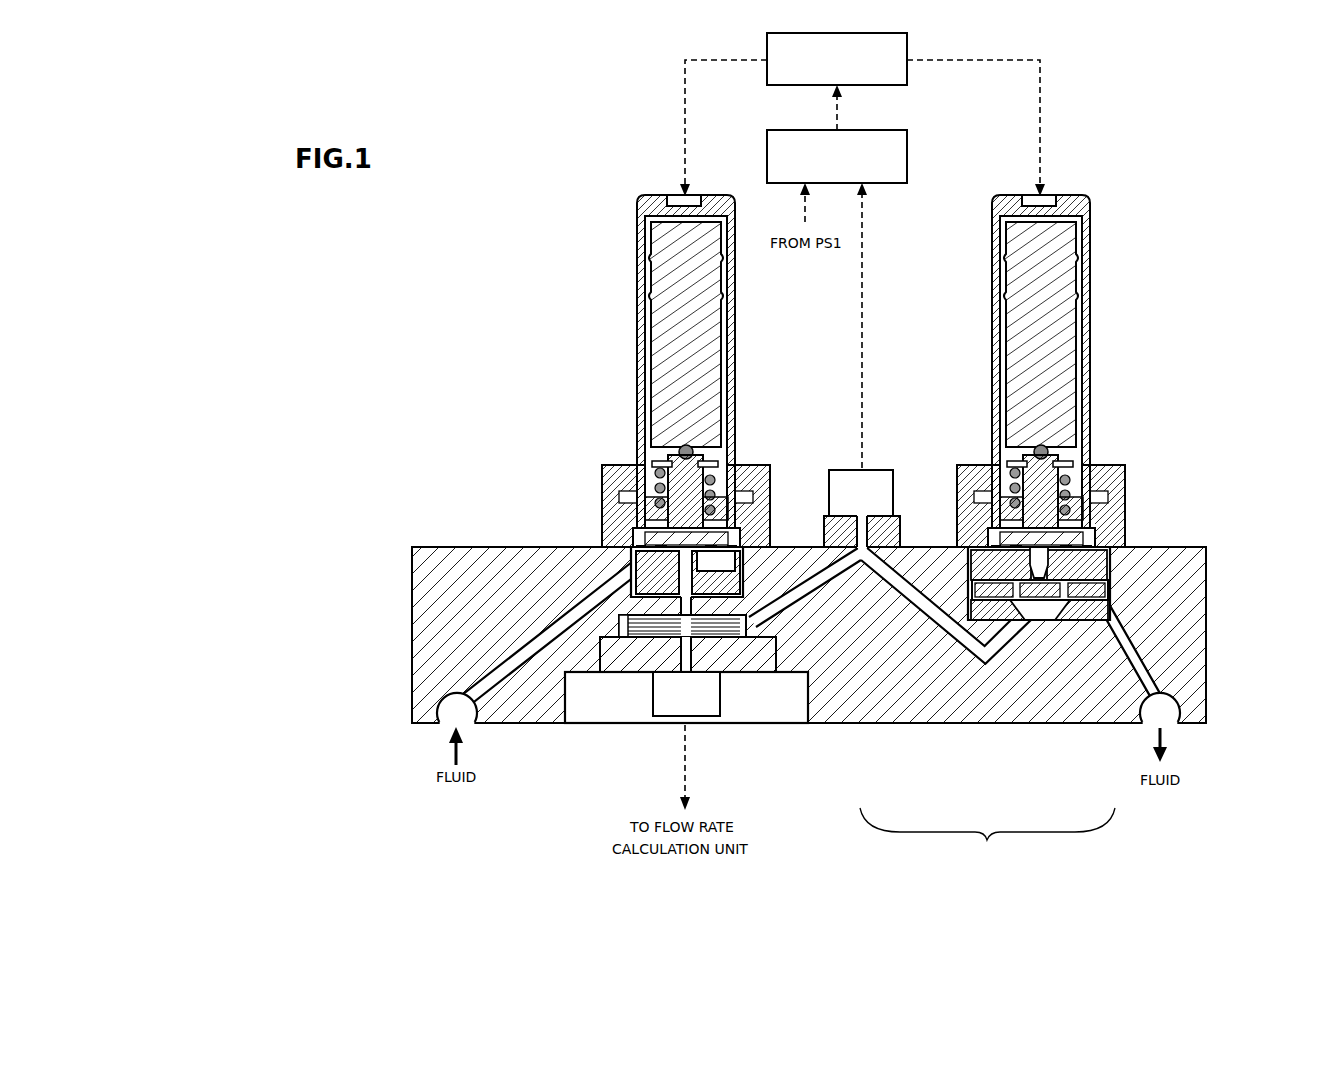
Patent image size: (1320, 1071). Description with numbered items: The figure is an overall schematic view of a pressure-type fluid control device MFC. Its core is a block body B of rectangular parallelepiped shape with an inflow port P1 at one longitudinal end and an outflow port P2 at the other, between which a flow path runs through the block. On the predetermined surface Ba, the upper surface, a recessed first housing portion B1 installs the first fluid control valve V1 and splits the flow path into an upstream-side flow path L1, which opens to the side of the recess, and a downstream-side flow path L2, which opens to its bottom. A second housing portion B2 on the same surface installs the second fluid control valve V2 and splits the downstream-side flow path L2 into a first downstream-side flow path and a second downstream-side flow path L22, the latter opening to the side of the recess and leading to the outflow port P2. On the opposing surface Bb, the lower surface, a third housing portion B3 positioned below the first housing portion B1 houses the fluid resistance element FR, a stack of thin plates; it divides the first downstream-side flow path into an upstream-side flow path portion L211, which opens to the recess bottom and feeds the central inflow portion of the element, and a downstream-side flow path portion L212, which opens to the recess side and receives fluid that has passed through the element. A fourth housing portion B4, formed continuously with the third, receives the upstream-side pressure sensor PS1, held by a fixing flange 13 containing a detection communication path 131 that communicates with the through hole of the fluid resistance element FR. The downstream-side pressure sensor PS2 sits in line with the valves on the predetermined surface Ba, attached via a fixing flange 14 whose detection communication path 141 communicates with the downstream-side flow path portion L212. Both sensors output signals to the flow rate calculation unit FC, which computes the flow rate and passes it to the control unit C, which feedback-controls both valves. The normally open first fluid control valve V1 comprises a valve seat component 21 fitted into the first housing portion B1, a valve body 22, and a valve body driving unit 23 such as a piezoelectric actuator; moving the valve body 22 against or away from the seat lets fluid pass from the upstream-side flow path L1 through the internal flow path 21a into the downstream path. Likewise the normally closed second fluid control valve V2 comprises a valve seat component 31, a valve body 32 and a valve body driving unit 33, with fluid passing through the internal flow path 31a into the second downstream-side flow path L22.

The fluid control device MFC is at (536, 108).
The control unit C is at (908, 45).
The flow rate calculation unit FC is at (908, 156).
The first fluid control valve V1 is at (612, 267).
The second fluid control valve V2 is at (977, 267).
The valve body driving unit 23 is at (650, 357).
The valve body driving unit 33 is at (1082, 352).
The valve body 22 is at (645, 533).
The valve seat component 21 is at (640, 548).
The internal flow path 21a is at (627, 567).
The valve seat component 31 is at (1090, 532).
The internal flow path 31a is at (1090, 568).
The valve body 32 is at (1100, 612).
The block body B is at (412, 590).
The predetermined surface Ba is at (472, 547).
The opposing surface Bb is at (582, 725).
The first housing portion B1 is at (745, 560).
The second housing portion B2 is at (1140, 668).
The third housing portion B3 is at (600, 632).
The fourth housing portion B4 is at (777, 652).
The upstream-side flow path L1 is at (508, 655).
The downstream-side flow path L2 is at (987, 836).
The upstream-side flow path portion L211 is at (693, 608).
The downstream-side flow path portion L212 is at (948, 632).
The second downstream-side flow path L22 is at (1148, 680).
The inflow port P1 is at (441, 735).
The outflow port P2 is at (1180, 732).
The fixing flange 13 is at (668, 722).
The detection communication path 131 is at (672, 652).
The upstream-side pressure sensor PS1 is at (698, 722).
The fixing flange 14 is at (880, 512).
The detection communication path 141 is at (870, 535).
The downstream-side pressure sensor PS2 is at (873, 470).
The fluid resistance element FR is at (722, 634).